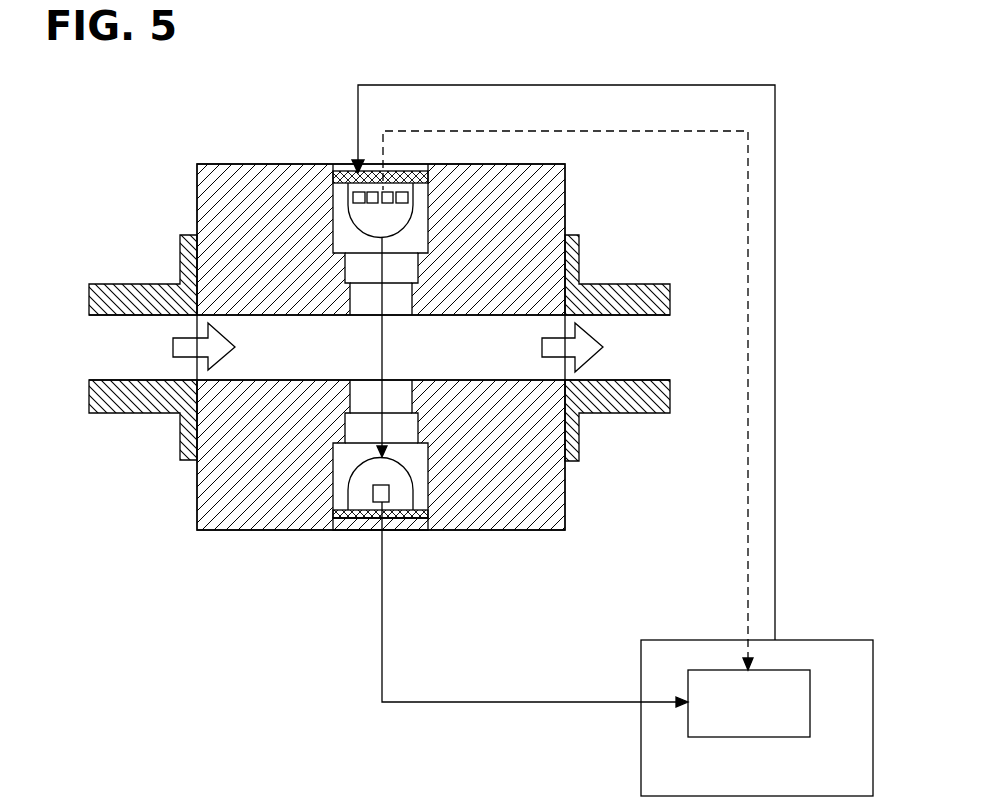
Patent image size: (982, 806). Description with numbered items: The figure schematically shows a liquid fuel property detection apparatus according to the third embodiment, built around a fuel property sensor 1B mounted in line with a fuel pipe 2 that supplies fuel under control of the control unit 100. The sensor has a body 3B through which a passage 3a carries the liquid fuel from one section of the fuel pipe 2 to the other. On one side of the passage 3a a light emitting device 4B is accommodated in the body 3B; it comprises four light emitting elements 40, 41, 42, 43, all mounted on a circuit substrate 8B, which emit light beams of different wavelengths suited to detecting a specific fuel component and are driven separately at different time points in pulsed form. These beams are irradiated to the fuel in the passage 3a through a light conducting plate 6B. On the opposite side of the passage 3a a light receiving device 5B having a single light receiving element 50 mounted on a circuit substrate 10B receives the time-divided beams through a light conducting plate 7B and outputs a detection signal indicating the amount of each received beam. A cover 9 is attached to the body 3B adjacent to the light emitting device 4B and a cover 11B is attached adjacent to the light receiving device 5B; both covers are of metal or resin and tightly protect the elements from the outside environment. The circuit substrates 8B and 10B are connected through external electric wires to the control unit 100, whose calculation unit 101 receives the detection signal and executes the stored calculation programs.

The fuel property sensor 1B is at (185, 147).
The body 3B is at (208, 185).
The passage 3a is at (262, 373).
The fuel pipe 2 is at (152, 292).
The light emitting device 4B is at (420, 202).
The light receiving device 5B is at (420, 497).
The light conducting plate 6B is at (400, 300).
The light conducting plate 7B is at (398, 398).
The circuit substrate 8B is at (343, 172).
The cover 9 is at (351, 170).
The light emitting element 40 is at (350, 197).
The light emitting element 41 is at (367, 190).
The light emitting element 42 is at (378, 190).
The light emitting element 43 is at (395, 190).
The light receiving element 50 is at (386, 505).
The circuit substrate 10B is at (339, 530).
The cover 11B is at (358, 530).
The control unit 100 is at (857, 640).
The calculation unit 101 is at (786, 670).